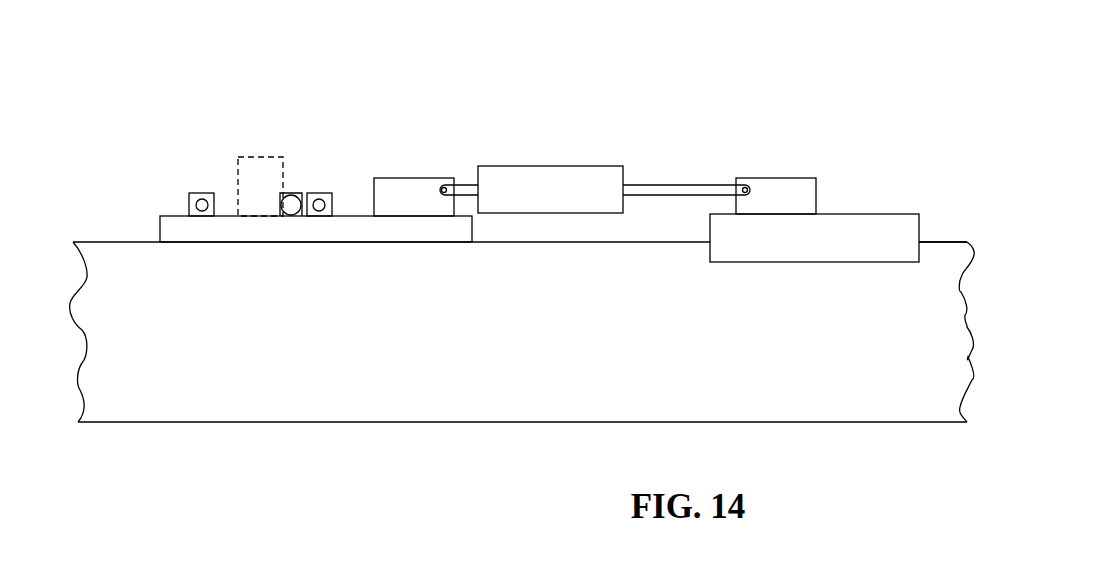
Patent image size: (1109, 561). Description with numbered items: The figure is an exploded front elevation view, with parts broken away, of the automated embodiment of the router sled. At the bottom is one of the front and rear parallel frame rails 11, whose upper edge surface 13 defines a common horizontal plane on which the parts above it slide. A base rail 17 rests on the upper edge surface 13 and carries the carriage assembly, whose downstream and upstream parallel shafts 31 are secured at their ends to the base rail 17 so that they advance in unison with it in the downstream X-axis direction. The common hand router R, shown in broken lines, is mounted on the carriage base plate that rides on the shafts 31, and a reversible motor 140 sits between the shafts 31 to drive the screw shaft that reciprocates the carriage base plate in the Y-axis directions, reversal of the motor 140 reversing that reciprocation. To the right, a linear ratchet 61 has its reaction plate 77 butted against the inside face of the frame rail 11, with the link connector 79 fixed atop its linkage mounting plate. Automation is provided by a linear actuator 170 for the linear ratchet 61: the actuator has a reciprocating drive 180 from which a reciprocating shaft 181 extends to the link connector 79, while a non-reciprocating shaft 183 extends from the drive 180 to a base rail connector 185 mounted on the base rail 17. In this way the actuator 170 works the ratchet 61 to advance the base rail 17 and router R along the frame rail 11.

The frame rail 11 is at (113, 262).
The upper edge surface 13 is at (947, 241).
The base rail 17 is at (333, 228).
The shaft 31 is at (197, 193).
The router R is at (257, 157).
The reversible motor 140 is at (282, 217).
The base rail connector 185 is at (408, 178).
The non-reciprocating shaft 183 is at (467, 184).
The reciprocating drive 180 is at (553, 165).
The linear actuator 170 is at (616, 112).
The reciprocating shaft 181 is at (668, 184).
The link connector 79 is at (773, 177).
The reaction plate 77 is at (852, 213).
The linear ratchet 61 is at (747, 275).